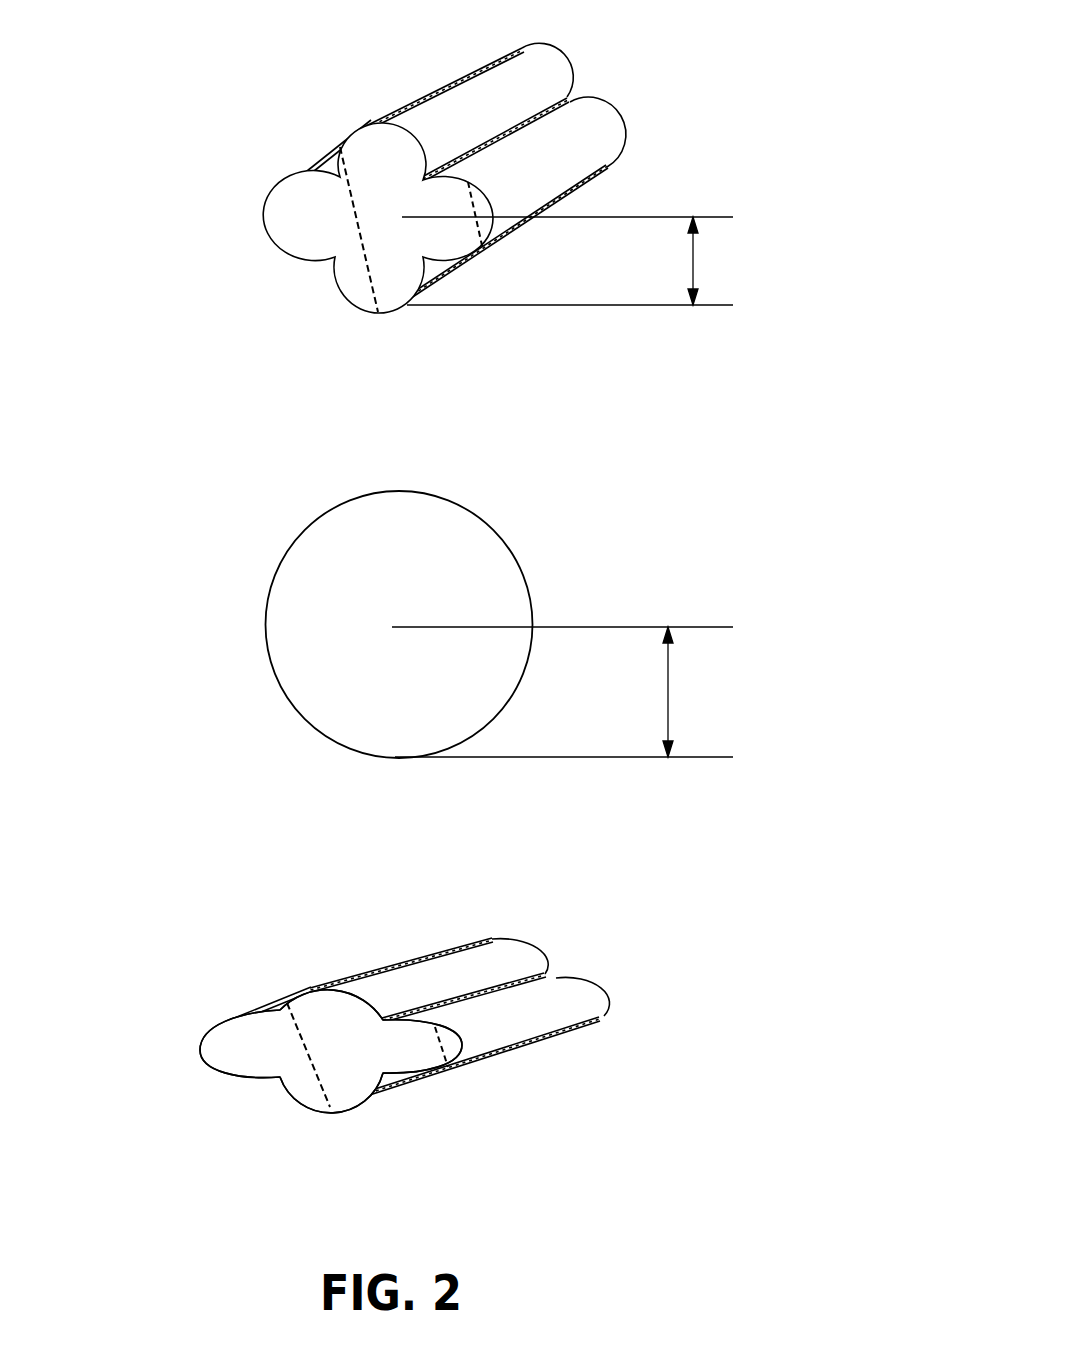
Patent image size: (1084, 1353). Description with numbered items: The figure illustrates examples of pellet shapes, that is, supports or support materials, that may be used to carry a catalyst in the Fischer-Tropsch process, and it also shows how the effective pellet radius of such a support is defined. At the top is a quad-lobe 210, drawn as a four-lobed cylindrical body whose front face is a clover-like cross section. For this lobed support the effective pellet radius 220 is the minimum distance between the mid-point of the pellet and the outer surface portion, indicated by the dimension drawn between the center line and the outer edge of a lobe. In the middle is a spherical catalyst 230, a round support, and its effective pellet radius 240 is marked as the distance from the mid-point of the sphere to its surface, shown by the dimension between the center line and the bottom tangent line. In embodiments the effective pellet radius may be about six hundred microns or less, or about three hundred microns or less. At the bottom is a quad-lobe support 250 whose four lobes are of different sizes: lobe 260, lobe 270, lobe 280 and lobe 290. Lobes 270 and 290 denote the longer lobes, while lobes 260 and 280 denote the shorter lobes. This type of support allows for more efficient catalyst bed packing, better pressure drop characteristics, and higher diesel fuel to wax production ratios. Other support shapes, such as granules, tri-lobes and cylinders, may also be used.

The quad-lobe 210 is at (546, 43).
The effective pellet radius 220 is at (695, 277).
The spherical catalyst 230 is at (483, 505).
The effective pellet radius of spherical support 240 is at (673, 692).
The quad-lobe support 250 is at (551, 946).
The lobe 260 is at (330, 1008).
The lobe 270 is at (417, 1040).
The lobe 280 is at (342, 1085).
The lobe 290 is at (251, 1045).